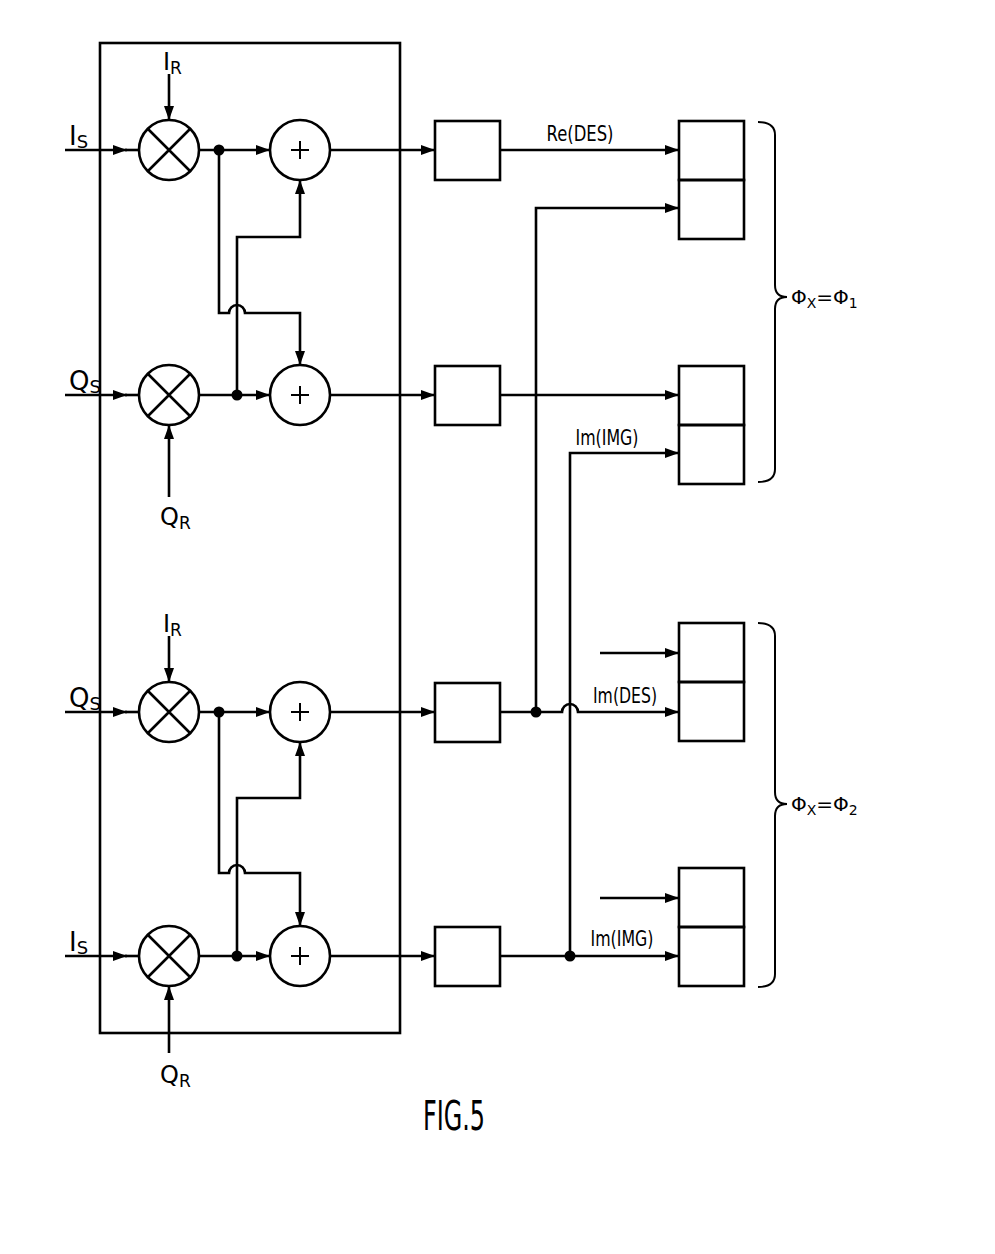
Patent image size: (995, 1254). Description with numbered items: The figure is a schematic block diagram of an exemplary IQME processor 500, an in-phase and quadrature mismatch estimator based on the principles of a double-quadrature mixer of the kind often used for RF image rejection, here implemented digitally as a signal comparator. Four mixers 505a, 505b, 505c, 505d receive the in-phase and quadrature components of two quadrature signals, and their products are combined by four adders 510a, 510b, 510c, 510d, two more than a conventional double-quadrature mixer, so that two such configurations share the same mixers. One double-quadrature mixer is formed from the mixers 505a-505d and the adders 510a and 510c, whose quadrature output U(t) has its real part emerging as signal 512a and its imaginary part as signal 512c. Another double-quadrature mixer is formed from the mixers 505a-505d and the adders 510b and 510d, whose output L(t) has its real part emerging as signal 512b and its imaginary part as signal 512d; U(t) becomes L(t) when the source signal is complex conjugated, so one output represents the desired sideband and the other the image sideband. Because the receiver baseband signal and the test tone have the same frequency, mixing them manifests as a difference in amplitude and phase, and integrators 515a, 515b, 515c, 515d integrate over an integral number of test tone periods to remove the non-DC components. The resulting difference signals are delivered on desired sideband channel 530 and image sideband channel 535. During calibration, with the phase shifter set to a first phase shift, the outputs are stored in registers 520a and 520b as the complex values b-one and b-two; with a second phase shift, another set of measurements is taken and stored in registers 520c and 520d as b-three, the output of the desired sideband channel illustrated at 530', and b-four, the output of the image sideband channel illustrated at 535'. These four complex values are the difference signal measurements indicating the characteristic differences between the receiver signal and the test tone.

The IQME processor 500 is at (584, 58).
The mixer 505a is at (175, 179).
The mixer 505b is at (181, 423).
The mixer 505c is at (176, 741).
The mixer 505d is at (172, 926).
The adder 510a is at (300, 120).
The adder 510b is at (300, 425).
The adder 510c is at (300, 682).
The adder 510d is at (300, 986).
The signal 512a is at (347, 150).
The signal 512b is at (347, 395).
The signal 512c is at (347, 712).
The signal 512d is at (347, 956).
The integrator 515a is at (468, 121).
The integrator 515b is at (468, 366).
The integrator 515c is at (468, 683).
The integrator 515d is at (468, 927).
The register 520a is at (713, 239).
The register 520b is at (713, 484).
The register 520c is at (713, 741).
The register 520d is at (713, 986).
The desired sideband channel 530 is at (607, 446).
The image sideband channel 535 is at (589, 348).
The desired sideband channel 530' is at (636, 611).
The image sideband channel 535' is at (635, 853).